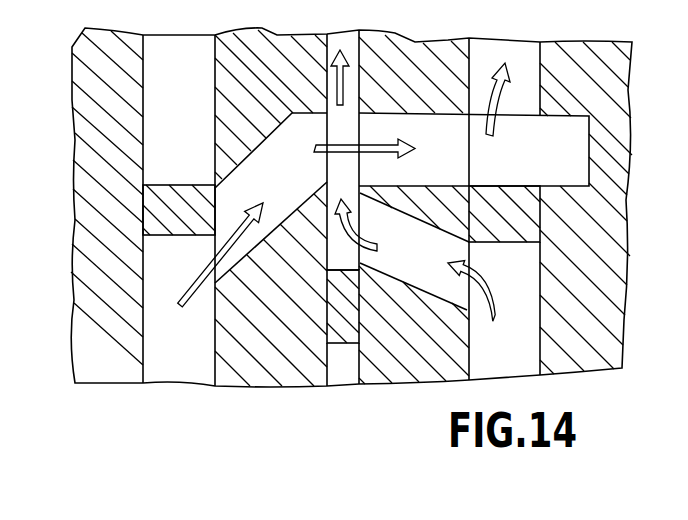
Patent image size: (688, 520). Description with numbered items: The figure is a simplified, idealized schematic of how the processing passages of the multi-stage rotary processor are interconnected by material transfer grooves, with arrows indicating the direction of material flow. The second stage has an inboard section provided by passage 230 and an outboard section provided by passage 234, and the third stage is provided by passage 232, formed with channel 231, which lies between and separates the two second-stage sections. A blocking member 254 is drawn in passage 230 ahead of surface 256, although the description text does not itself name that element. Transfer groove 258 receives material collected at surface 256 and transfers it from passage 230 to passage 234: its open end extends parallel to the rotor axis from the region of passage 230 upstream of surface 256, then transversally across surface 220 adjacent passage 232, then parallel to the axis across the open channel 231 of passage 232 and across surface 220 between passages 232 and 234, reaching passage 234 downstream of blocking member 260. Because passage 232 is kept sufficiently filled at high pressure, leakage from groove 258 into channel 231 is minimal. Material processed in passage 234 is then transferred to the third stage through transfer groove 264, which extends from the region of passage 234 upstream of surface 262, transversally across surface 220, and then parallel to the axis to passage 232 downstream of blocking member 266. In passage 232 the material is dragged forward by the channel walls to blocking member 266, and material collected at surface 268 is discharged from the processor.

The surface 220 is at (245, 353).
The passage 230 is at (152, 353).
The channel 231 is at (353, 122).
The passage 232 is at (335, 249).
The passage 234 is at (485, 353).
The plug 254 is at (175, 192).
The surface 256 is at (197, 238).
The transfer groove 258 is at (289, 132).
The blocking member 260 is at (519, 191).
The surface 262 is at (523, 244).
The transfer groove 264 is at (428, 273).
The blocking member 266 is at (340, 345).
The surface 268 is at (344, 270).